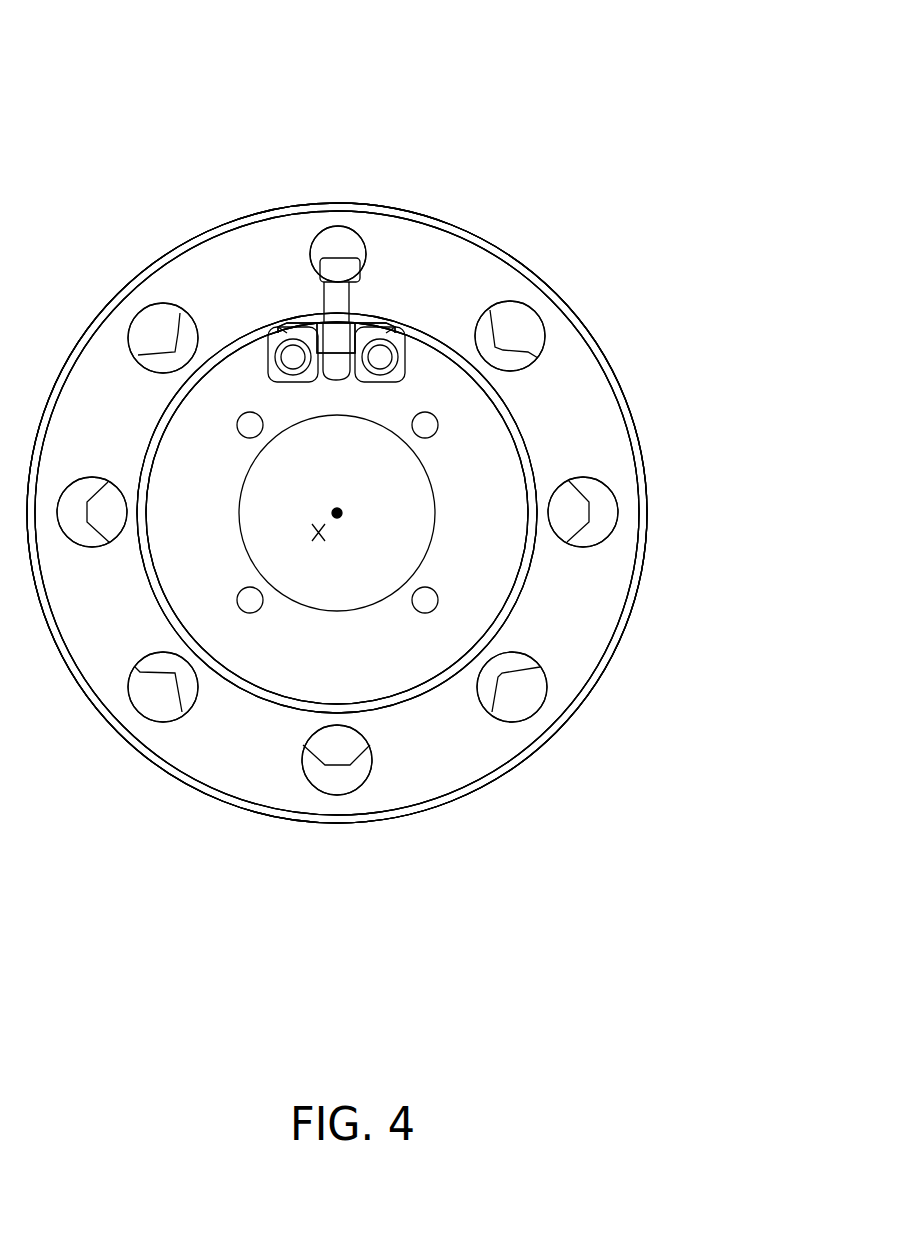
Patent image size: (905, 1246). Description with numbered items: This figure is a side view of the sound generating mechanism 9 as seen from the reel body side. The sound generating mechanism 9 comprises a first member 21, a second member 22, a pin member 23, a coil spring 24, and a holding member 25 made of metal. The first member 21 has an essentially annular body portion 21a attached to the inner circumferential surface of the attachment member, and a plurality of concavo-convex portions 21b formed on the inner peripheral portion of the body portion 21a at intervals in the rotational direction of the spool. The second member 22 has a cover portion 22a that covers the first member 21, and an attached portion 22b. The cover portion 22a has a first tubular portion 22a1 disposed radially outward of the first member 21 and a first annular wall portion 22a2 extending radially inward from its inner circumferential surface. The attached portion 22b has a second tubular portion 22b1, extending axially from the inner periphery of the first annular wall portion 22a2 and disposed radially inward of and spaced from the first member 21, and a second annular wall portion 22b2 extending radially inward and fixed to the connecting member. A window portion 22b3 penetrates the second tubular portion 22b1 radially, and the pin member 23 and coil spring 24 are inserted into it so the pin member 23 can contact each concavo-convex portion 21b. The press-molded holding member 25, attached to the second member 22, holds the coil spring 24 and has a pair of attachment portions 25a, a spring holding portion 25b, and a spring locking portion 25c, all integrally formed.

The sound generating mechanism 9 is at (513, 103).
The first member 21 is at (172, 183).
The body portion 21a is at (143, 323).
The concavo-convex portions 21b is at (178, 323).
The second member 22 is at (336, 832).
The cover portion 22a is at (272, 945).
The first tubular portion 22a1 is at (178, 771).
The first annular wall portion 22a2 is at (270, 782).
The attached portion 22b is at (587, 868).
The second tubular portion 22b1 is at (427, 692).
The second annular wall portion 22b2 is at (490, 590).
The window portion 22b3 is at (395, 325).
The pin member 23 is at (360, 268).
The coil spring 24 is at (320, 293).
The holding member 25 is at (411, 370).
The attachment portions 25a is at (273, 388).
The spring holding portion 25b is at (336, 340).
The spring locking portion 25c is at (340, 365).